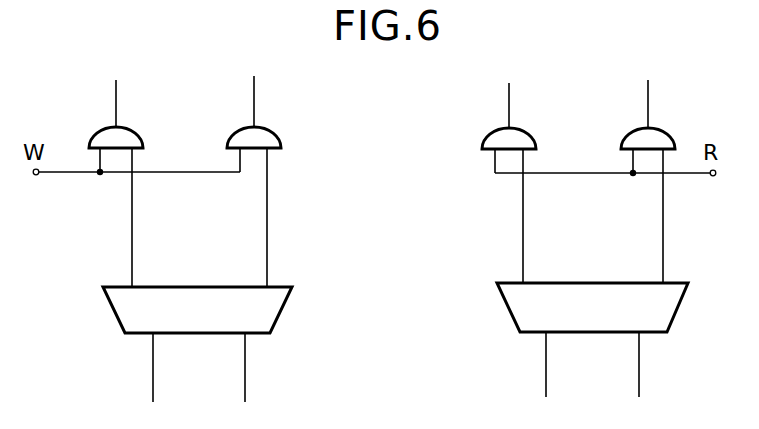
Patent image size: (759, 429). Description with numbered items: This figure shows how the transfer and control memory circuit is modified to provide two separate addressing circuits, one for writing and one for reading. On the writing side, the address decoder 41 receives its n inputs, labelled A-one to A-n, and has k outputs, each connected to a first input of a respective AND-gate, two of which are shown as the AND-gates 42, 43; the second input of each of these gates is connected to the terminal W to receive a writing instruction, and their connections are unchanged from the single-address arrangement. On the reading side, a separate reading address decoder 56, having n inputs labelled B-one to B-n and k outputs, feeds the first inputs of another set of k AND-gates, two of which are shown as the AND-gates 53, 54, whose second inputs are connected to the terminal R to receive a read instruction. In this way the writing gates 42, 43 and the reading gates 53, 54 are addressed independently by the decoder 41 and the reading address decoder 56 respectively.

The address decoder 41 is at (126, 316).
The AND-gate 42 is at (107, 140).
The AND-gate 43 is at (262, 139).
The AND-gate 53 is at (528, 133).
The AND-gate 54 is at (663, 131).
The reading address decoder 56 is at (666, 311).